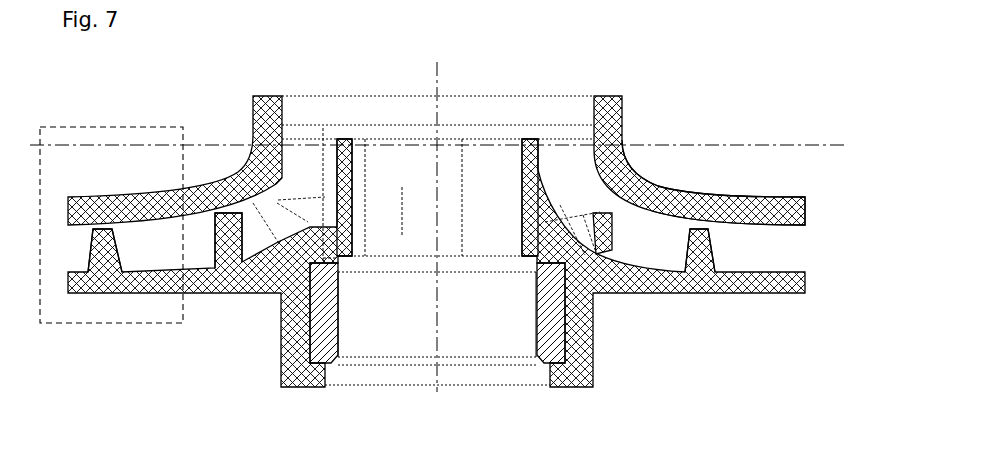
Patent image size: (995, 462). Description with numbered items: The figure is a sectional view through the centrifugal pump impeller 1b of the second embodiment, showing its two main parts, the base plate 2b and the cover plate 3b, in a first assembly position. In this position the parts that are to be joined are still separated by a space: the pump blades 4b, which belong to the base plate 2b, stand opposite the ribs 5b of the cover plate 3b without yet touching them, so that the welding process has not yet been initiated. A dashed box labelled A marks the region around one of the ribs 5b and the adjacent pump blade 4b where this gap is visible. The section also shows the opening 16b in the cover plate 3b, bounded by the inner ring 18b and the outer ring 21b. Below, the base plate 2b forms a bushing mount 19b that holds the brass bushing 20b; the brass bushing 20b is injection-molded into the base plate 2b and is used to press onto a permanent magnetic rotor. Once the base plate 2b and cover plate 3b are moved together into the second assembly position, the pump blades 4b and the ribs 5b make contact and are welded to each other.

The centrifugal pump impeller 1b is at (437, 228).
The base plate 2b is at (733, 294).
The cover plate 3b is at (803, 196).
The pump blades 4b is at (95, 240).
The ribs 5b is at (102, 198).
The opening 16b is at (478, 116).
The inner ring 18b is at (342, 140).
The bushing mount 19b is at (592, 338).
The brass bushing 20b is at (536, 318).
The outer ring 21b is at (607, 96).
The detail region A is at (150, 127).